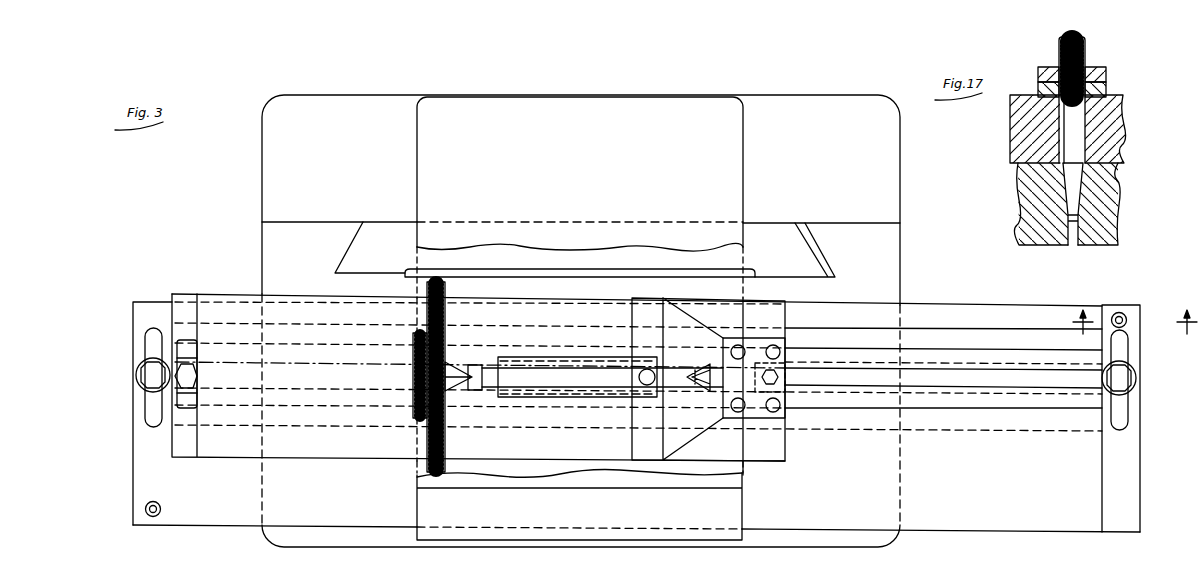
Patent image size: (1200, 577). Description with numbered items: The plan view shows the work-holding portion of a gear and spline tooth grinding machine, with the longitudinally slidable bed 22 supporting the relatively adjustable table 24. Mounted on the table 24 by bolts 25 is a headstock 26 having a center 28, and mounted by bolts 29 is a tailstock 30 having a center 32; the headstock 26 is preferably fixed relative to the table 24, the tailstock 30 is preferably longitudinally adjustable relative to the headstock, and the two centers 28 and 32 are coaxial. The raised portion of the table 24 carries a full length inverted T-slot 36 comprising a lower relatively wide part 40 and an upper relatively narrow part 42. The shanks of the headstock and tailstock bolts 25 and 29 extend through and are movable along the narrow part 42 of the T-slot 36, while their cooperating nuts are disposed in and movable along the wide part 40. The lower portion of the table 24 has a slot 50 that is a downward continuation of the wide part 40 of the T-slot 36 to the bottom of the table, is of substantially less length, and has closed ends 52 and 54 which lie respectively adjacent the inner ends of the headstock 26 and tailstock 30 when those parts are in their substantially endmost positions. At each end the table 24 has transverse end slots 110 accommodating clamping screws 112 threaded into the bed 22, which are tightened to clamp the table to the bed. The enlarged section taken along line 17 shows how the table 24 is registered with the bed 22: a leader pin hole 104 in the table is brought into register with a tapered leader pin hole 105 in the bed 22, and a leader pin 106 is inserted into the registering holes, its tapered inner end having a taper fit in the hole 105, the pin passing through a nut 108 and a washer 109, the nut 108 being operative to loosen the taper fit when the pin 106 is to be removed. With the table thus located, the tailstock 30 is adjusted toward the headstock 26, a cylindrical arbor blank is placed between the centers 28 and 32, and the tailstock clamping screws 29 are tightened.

In FIG. 17, the bed 22 is at (1119, 206).
In FIG. 3, the table 24 is at (1000, 534).
In FIG. 3, the bolts 25 is at (199, 378).
In FIG. 3, the headstock 26 is at (347, 460).
In FIG. 3, the center 28 is at (448, 385).
In FIG. 3, the bolts 29 is at (647, 386).
In FIG. 3, the tailstock 30 is at (787, 451).
In FIG. 3, the center 32 is at (718, 366).
In FIG. 3, the inverted T-slot 36 is at (1008, 391).
In FIG. 3, the lower relatively wide part 40 is at (1035, 363).
In FIG. 3, the upper relatively narrow part 42 is at (962, 371).
In FIG. 3, the slot 50 is at (492, 398).
In FIG. 3, the closed end 52 is at (476, 365).
In FIG. 3, the closed end 54 is at (782, 364).
In FIG. 3, the line 17— 17 is at (1133, 329).
In FIG. 17, the leader pin holes 104 is at (1081, 121).
In FIG. 17, the tapered leader pin holes 105 is at (1081, 184).
In FIG. 3, the leader pins 106 is at (150, 514).
In FIG. 17, the leader pins 106 is at (1087, 61).
In FIG. 3, the nut 108 is at (157, 513).
In FIG. 17, the nut 108 is at (1107, 74).
In FIG. 17, the washer 109 is at (1107, 86).
In FIG. 3, the transverse end slots 110 is at (146, 343).
In FIG. 3, the clamping screws 112 is at (143, 381).